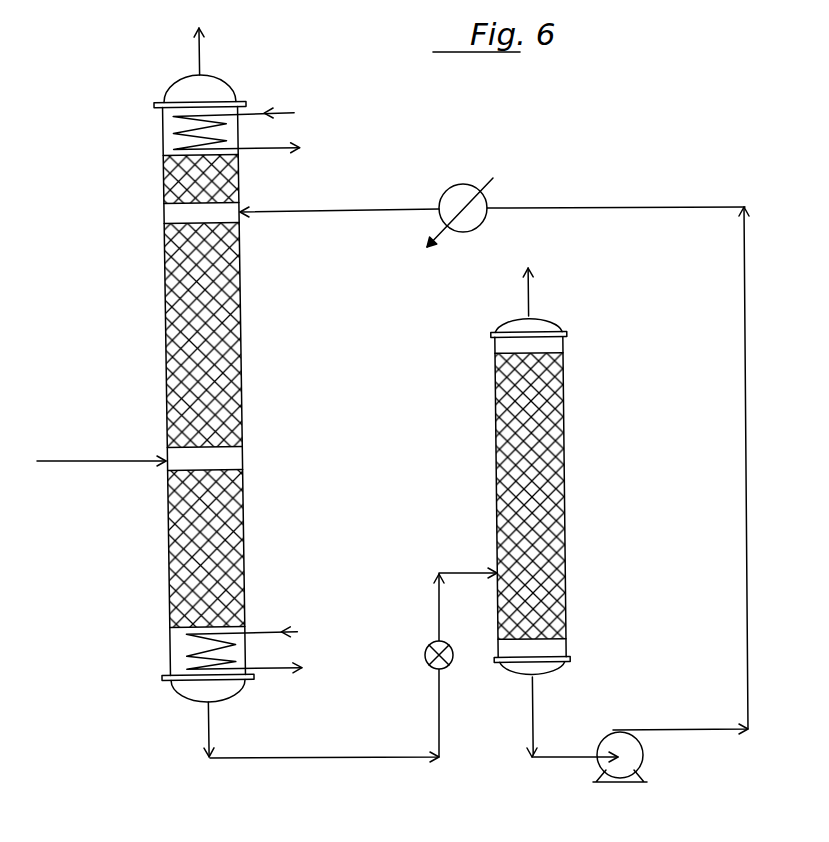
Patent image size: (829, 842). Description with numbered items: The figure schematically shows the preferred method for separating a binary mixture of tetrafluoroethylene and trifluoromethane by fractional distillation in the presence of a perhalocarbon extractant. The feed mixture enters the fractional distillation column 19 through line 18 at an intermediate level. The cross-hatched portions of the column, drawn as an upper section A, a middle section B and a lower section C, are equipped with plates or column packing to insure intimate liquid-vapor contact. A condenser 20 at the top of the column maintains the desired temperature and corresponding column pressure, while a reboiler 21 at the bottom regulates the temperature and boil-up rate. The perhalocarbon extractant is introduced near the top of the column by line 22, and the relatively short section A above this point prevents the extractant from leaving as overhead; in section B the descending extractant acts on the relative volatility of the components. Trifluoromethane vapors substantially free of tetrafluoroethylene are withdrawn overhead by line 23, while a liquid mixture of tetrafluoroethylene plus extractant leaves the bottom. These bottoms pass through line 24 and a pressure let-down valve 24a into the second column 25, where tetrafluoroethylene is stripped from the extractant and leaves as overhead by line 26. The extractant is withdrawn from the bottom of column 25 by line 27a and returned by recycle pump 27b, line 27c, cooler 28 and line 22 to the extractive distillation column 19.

The line 18 is at (92, 460).
The fractional distillation column 19 is at (204, 389).
The condenser 20 is at (257, 113).
The reboiler 21 is at (258, 633).
The line 22 is at (345, 213).
The line 23 is at (198, 54).
The line 24 is at (357, 758).
The pressure let-down valve 24a is at (432, 645).
The column 25 is at (566, 447).
The line 26 is at (531, 293).
The line 27a is at (563, 758).
The recycle pump 27b is at (613, 740).
The line 27c is at (748, 642).
The cooler 28 is at (455, 197).
The section A is at (182, 172).
The section B is at (182, 281).
The section C is at (200, 528).